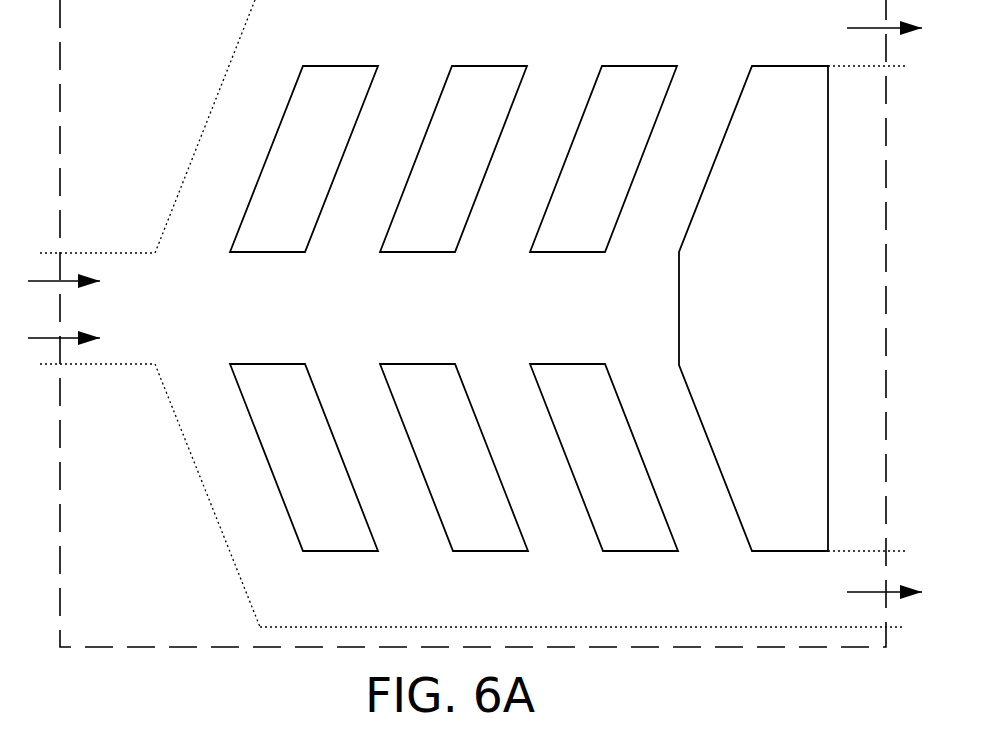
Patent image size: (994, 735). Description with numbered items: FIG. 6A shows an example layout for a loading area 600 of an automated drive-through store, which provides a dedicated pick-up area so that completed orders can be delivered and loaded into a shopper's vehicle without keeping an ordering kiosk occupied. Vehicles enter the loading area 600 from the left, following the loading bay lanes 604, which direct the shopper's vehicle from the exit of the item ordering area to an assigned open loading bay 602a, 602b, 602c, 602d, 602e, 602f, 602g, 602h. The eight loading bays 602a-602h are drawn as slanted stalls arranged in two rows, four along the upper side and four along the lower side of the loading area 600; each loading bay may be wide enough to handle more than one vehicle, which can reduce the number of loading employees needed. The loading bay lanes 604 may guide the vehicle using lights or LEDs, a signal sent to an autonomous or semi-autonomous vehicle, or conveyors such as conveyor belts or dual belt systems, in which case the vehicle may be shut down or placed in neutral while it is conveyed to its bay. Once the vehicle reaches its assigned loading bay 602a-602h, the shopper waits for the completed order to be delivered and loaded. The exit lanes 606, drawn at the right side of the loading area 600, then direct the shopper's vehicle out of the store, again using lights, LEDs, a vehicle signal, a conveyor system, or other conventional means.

The loading area 600 is at (133, 28).
The loading bay 602a is at (230, 135).
The loading bay 602b is at (400, 133).
The loading bay 602c is at (551, 117).
The loading bay 602d is at (697, 130).
The loading bay 602e is at (230, 470).
The loading bay 602f is at (400, 480).
The loading bay 602g is at (550, 477).
The loading bay 602h is at (700, 475).
The loading bay lanes 604 is at (140, 343).
The exit lanes 606 is at (807, 25).